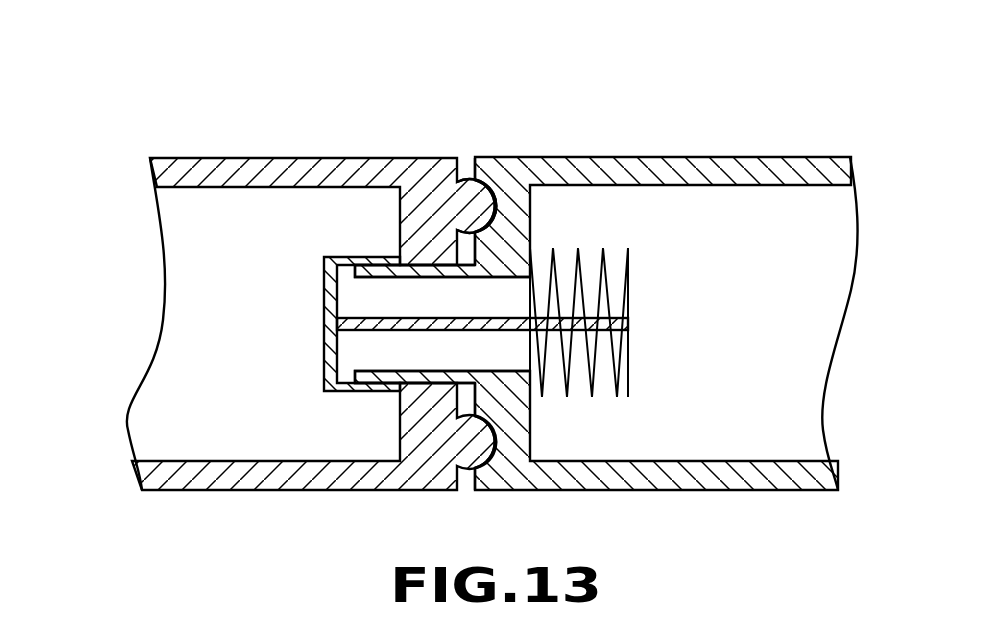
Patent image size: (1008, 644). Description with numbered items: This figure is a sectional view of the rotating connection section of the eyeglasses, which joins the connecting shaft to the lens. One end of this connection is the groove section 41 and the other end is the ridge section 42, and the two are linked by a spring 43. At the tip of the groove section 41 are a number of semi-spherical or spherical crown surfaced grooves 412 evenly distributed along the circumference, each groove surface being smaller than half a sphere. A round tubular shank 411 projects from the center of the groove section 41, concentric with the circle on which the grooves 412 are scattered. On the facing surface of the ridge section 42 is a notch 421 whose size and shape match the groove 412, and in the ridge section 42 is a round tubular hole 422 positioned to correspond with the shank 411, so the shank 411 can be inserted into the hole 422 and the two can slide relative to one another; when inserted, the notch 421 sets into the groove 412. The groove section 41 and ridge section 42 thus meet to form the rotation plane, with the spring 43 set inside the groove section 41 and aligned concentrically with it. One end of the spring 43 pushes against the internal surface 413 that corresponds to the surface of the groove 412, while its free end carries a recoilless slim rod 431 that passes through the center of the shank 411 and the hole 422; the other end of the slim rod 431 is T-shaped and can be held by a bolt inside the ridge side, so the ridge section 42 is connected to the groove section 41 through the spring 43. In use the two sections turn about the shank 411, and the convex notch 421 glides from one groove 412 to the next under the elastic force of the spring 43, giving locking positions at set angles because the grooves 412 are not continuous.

The groove section 41 is at (665, 113).
The ridge section 42 is at (197, 98).
The spring 43 is at (665, 322).
The round tubular shank 411 is at (428, 266).
The grooves 412 is at (497, 200).
The internal surface 413 is at (530, 412).
The notch 421 is at (472, 197).
The round tubular hole 422 is at (335, 257).
The slim rod 431 is at (365, 325).